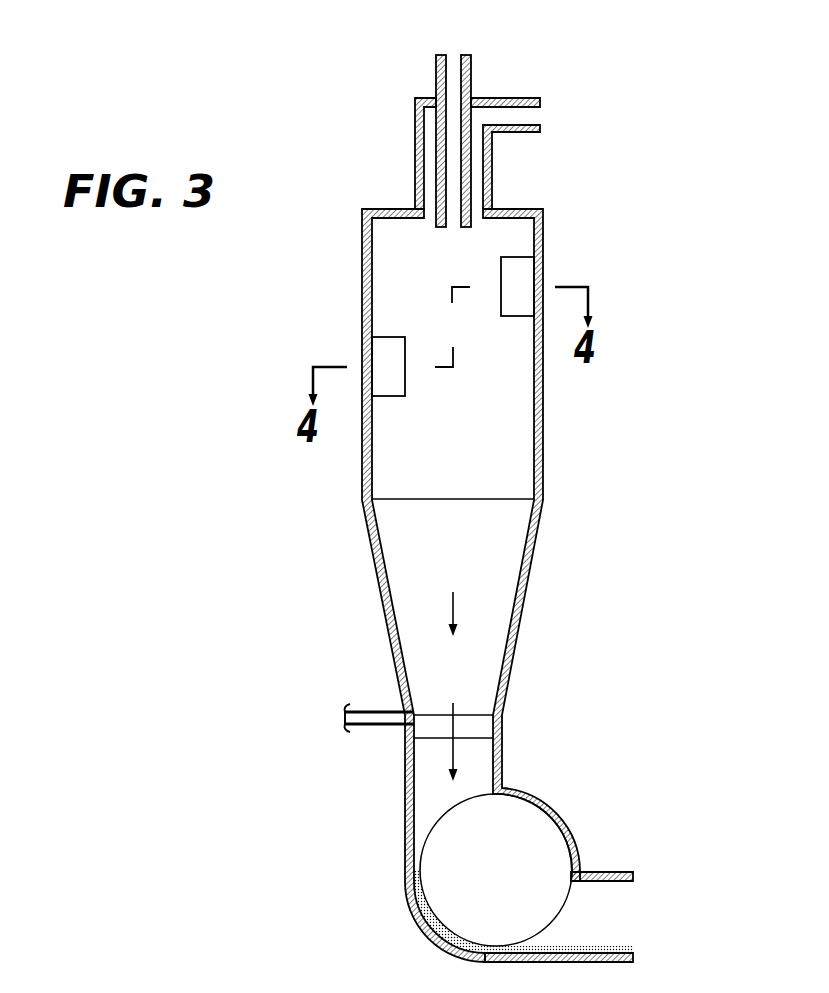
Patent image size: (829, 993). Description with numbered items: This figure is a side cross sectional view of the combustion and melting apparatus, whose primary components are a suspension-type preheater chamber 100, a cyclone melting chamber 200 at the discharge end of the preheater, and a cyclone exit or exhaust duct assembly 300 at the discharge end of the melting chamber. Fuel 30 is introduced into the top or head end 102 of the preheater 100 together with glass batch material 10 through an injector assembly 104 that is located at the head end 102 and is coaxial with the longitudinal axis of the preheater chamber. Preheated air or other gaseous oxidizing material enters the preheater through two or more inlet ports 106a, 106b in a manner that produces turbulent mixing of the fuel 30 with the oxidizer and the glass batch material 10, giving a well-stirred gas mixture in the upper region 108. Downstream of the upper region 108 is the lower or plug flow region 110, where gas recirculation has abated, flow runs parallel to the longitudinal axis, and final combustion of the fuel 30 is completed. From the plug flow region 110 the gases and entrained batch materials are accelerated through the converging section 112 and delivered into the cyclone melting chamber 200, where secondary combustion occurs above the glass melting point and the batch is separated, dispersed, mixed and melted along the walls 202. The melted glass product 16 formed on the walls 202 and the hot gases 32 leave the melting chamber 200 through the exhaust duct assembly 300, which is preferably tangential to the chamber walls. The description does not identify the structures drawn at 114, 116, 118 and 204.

The glass batch material 10 is at (455, 45).
The fuel 30 is at (523, 113).
The preheater chamber 100 is at (558, 423).
The head end 102 is at (512, 208).
The injector assembly 104 is at (417, 137).
The inlet port 106a is at (385, 359).
The inlet port 106b is at (519, 275).
The upper region 108 is at (423, 270).
The plug flow region 110 is at (423, 448).
The converging section 112 is at (482, 583).
The inlet port 114 is at (370, 697).
The throat 116 is at (453, 720).
The tapered wall 118 is at (385, 606).
The melted glass product 16 is at (461, 915).
The cyclone melting chamber 200 is at (550, 821).
The walls 202 is at (548, 822).
The elbow section 204 is at (518, 756).
The exhaust duct assembly 300 is at (634, 974).
The hot gases 32 is at (643, 900).